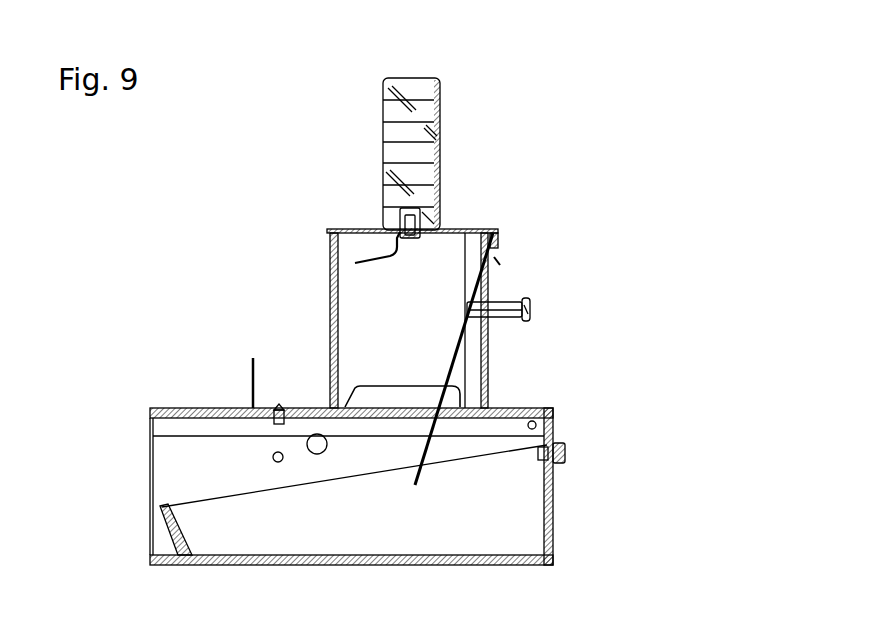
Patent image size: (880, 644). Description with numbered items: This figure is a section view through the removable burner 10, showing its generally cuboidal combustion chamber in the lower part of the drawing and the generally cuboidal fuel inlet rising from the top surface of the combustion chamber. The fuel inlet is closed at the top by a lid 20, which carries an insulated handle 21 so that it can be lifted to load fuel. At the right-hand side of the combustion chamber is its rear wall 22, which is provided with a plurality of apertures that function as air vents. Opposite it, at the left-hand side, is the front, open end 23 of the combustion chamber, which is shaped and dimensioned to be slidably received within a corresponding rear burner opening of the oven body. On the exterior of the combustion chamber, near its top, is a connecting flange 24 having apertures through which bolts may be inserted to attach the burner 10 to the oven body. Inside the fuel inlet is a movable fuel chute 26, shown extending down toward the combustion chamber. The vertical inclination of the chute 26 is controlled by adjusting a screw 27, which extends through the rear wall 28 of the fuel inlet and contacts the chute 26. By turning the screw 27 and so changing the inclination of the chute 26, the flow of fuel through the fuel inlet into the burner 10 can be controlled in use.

The removable burner 10 is at (628, 426).
The lid 20 is at (353, 229).
The insulated handle 21 is at (433, 78).
The rear wall 22 is at (555, 508).
The front open end 23 is at (115, 485).
The connecting flange 24 is at (249, 373).
The movable fuel chute 26 is at (448, 375).
The screw 27 is at (530, 302).
The rear wall of the fuel inlet 28 is at (490, 277).